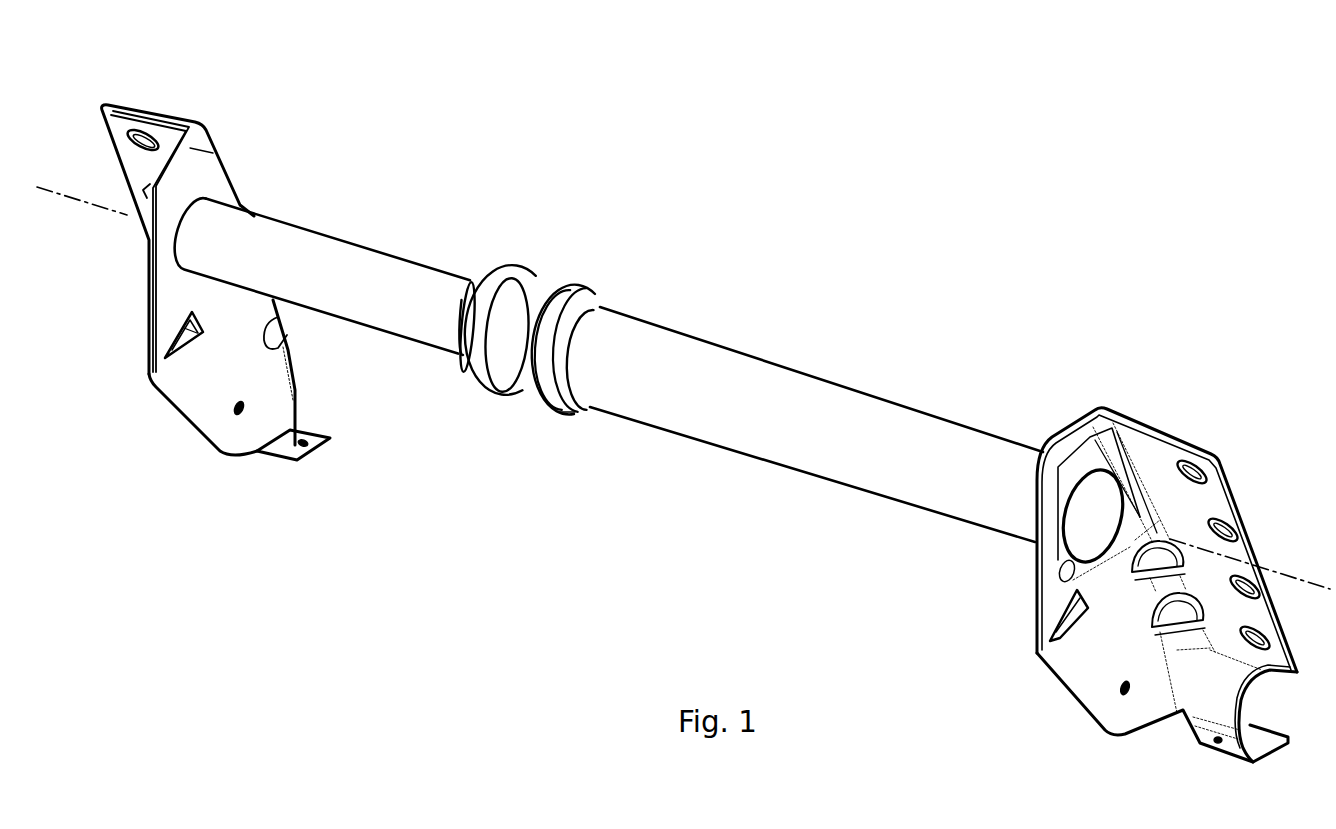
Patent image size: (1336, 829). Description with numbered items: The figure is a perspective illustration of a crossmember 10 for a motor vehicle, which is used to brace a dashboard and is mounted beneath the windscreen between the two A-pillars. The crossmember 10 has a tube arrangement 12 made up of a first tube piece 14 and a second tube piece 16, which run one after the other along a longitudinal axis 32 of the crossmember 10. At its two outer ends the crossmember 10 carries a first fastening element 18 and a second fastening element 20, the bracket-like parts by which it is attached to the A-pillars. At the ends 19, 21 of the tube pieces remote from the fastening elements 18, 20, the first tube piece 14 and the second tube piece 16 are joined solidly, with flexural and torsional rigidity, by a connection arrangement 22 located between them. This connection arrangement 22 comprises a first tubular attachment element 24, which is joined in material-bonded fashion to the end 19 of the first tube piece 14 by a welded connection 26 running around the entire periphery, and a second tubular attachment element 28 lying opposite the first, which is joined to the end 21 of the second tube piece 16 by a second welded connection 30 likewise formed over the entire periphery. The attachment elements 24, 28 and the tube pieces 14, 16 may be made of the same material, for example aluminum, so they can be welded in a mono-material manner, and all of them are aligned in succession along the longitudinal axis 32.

The crossmember 10 is at (660, 98).
The tube arrangement 12 is at (664, 216).
The first tube piece 14 is at (352, 247).
The second tube piece 16 is at (830, 380).
The first fastening element 18 is at (207, 410).
The end 19 is at (472, 274).
The second fastening element 20 is at (1092, 690).
The end 21 is at (549, 418).
The connection arrangement 22 is at (524, 244).
The first tubular attachment element 24 is at (487, 365).
The welded connection 26 is at (458, 347).
The second tubular attachment element 28 is at (565, 298).
The second welded connection 30 is at (604, 308).
The longitudinal axis 32 is at (1264, 568).